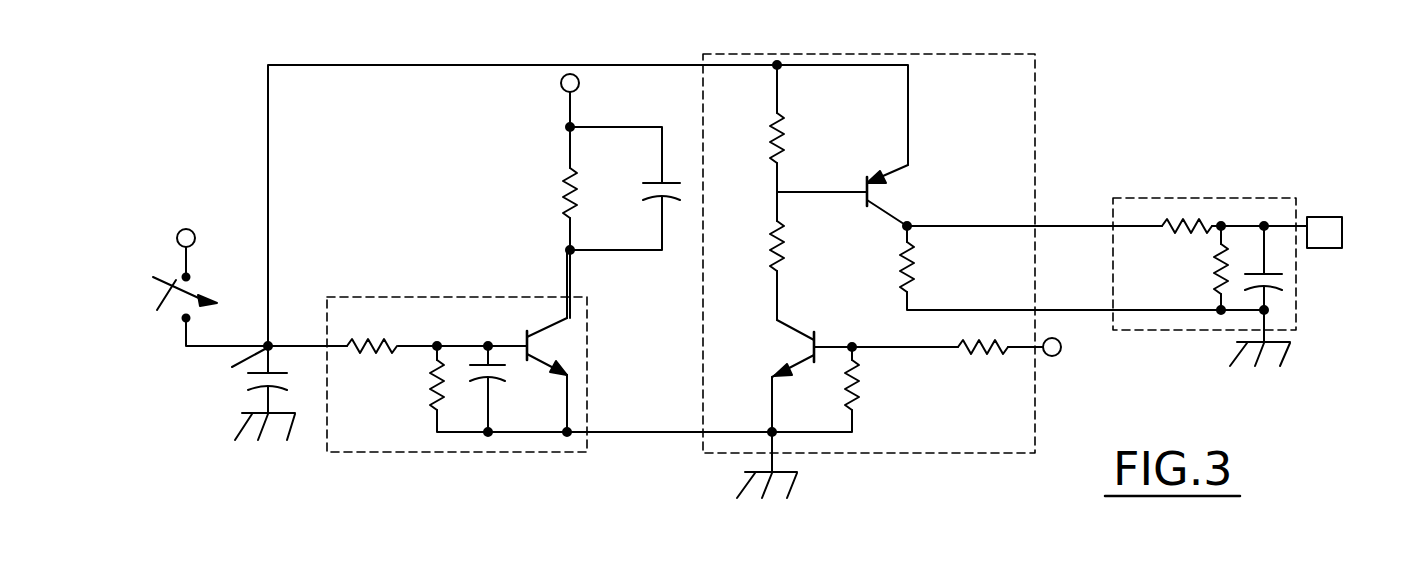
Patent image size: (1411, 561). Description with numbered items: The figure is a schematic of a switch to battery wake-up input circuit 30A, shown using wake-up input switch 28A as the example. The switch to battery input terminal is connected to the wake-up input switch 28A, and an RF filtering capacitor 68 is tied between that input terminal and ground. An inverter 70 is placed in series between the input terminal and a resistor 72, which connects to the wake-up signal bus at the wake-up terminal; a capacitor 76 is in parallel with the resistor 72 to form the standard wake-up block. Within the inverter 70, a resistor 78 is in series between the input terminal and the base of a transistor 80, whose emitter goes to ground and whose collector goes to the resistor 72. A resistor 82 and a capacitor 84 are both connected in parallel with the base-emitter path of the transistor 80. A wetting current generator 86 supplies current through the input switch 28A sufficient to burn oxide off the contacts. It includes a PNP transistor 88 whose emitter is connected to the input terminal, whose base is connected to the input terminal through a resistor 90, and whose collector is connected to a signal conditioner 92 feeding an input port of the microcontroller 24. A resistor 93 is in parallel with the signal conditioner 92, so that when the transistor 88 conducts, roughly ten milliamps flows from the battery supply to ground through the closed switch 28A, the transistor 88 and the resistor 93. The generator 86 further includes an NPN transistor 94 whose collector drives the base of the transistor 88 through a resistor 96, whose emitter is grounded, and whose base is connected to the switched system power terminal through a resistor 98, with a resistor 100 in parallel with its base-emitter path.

The switch to battery wake-up input circuit 30A is at (1140, 101).
The wake-up input switch 28A is at (176, 290).
The RF filtering capacitor 68 is at (262, 388).
The inverter 70 is at (392, 452).
The resistor 78 is at (383, 343).
The transistor 80 is at (525, 338).
The resistor 82 is at (435, 385).
The capacitor 84 is at (492, 378).
The resistor 72 is at (565, 178).
The capacitor 76 is at (652, 180).
The wetting current generator 86 is at (1037, 76).
The PNP transistor 88 is at (864, 180).
The resistor 90 is at (770, 160).
The resistor 96 is at (768, 258).
The resistor 93 is at (915, 270).
The NPN transistor 94 is at (815, 340).
The resistor 100 is at (860, 383).
The resistor 98 is at (983, 357).
The signal conditioner 92 is at (1205, 197).
The microcontroller 24 is at (1323, 216).